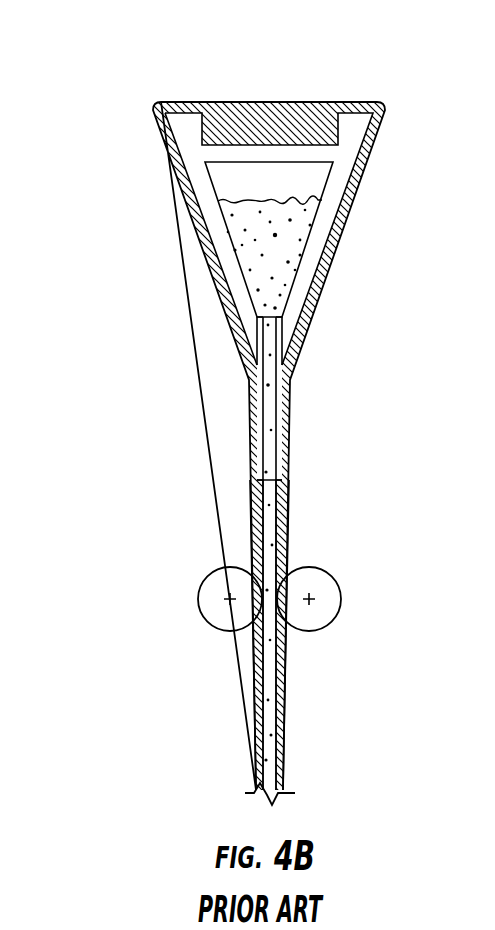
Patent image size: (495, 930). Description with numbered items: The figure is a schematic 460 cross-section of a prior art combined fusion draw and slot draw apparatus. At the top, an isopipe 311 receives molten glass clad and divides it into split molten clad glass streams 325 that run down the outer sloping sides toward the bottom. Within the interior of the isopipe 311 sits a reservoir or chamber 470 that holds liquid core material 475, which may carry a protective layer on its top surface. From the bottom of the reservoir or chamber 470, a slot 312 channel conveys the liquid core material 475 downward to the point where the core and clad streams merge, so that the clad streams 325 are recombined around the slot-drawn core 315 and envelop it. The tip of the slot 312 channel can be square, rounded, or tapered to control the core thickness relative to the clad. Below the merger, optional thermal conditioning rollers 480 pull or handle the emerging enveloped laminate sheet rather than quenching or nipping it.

The schematic 460 is at (163, 75).
The isopipe 311 is at (353, 127).
The reservoir or chamber 470 is at (326, 183).
The liquid core material 475 is at (280, 262).
The slot channel 312 is at (283, 442).
The split molten clad glass streams 325 is at (287, 518).
The core 315 is at (273, 562).
The thermal conditioning rollers 480 is at (198, 600).